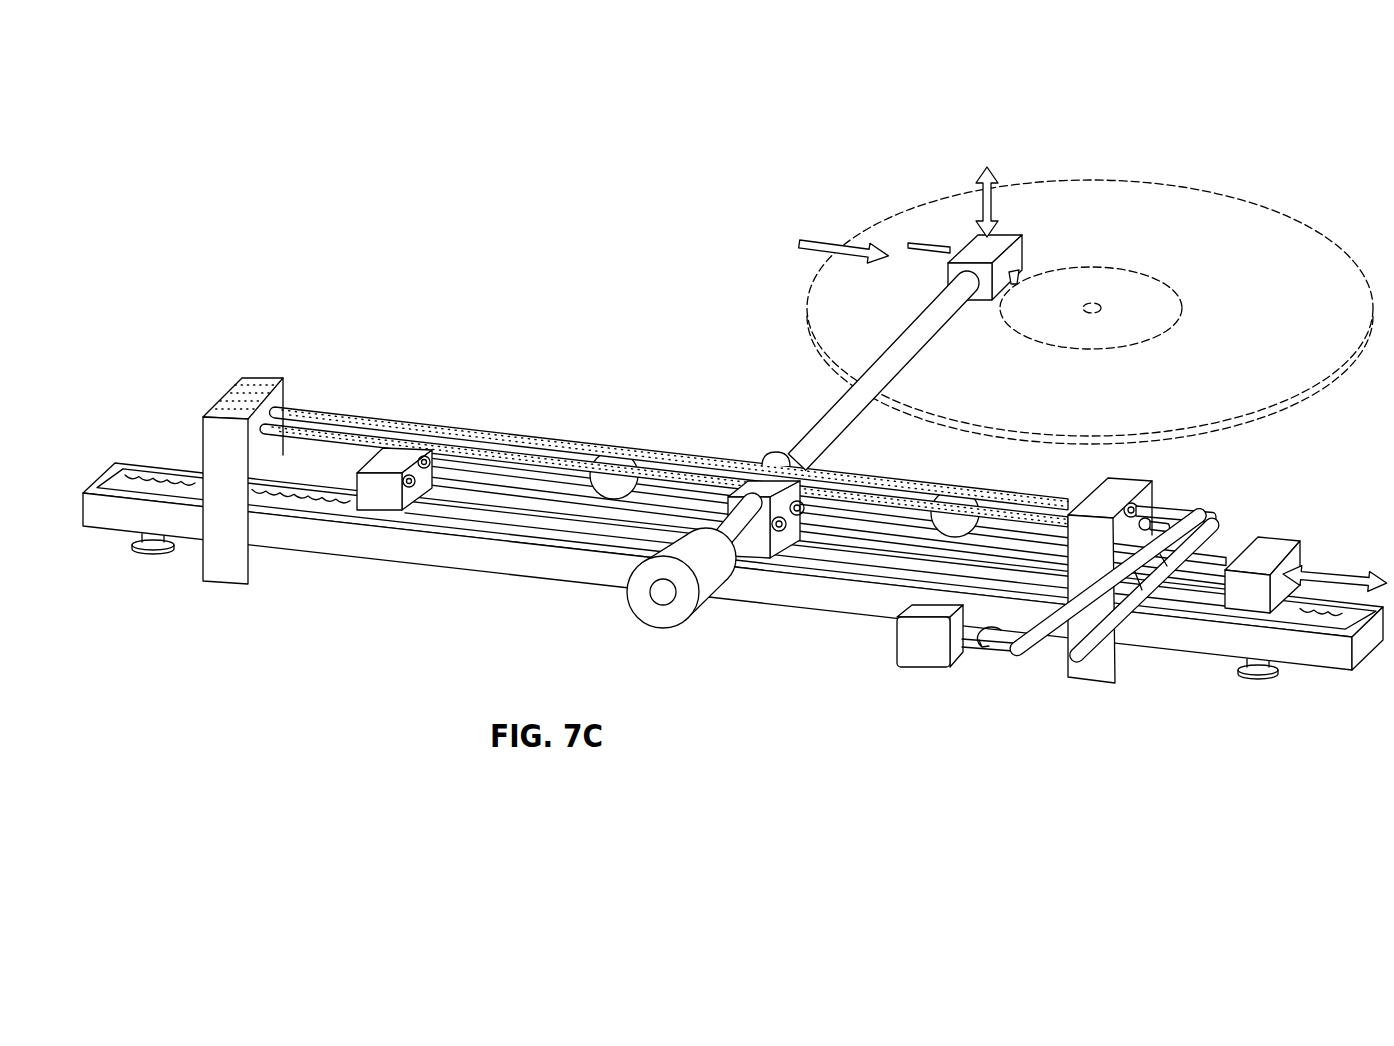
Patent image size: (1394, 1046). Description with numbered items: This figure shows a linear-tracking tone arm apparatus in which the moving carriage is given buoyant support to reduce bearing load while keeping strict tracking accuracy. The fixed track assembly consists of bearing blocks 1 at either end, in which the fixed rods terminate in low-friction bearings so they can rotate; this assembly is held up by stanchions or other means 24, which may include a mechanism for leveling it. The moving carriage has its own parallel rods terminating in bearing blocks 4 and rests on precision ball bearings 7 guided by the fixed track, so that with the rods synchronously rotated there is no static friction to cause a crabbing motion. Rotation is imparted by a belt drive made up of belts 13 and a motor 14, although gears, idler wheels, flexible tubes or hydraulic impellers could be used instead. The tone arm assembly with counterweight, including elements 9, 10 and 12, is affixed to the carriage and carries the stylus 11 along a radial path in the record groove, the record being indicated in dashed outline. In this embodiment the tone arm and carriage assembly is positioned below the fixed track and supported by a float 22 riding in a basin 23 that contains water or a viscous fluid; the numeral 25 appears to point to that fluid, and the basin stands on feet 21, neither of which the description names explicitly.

The bearing block 1 is at (240, 400).
The bearing block 4 is at (382, 490).
The precision ball bearing 7 is at (625, 490).
The tone arm assembly element 9 is at (852, 400).
The tone arm assembly element 10 is at (982, 243).
The stylus 11 is at (1018, 282).
The tone arm assembly element 12 is at (647, 602).
The belt 13 is at (1035, 638).
The motor 14 is at (923, 640).
The foot 21 is at (143, 554).
The float 22 is at (513, 518).
The basin 23 is at (158, 463).
The stanchion 24 is at (287, 384).
The liquid 25 is at (314, 500).